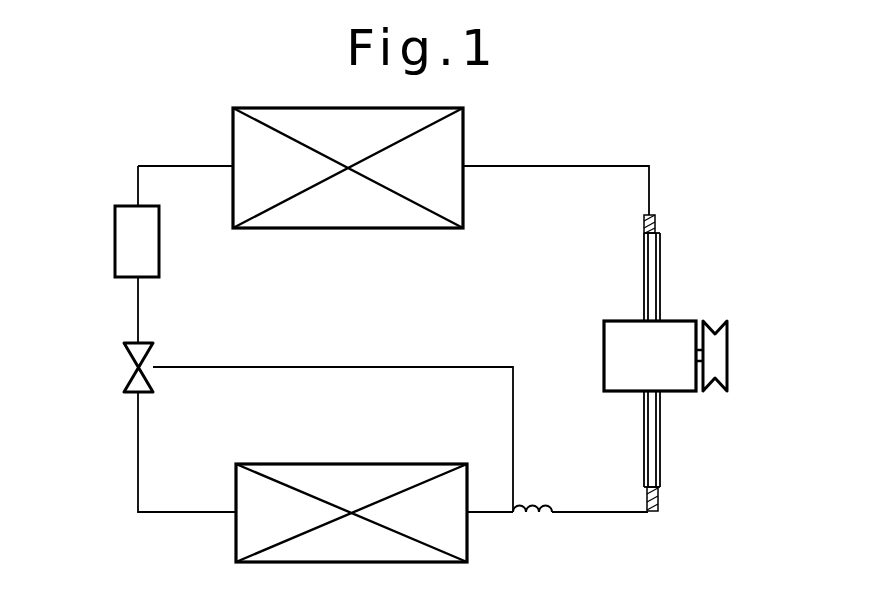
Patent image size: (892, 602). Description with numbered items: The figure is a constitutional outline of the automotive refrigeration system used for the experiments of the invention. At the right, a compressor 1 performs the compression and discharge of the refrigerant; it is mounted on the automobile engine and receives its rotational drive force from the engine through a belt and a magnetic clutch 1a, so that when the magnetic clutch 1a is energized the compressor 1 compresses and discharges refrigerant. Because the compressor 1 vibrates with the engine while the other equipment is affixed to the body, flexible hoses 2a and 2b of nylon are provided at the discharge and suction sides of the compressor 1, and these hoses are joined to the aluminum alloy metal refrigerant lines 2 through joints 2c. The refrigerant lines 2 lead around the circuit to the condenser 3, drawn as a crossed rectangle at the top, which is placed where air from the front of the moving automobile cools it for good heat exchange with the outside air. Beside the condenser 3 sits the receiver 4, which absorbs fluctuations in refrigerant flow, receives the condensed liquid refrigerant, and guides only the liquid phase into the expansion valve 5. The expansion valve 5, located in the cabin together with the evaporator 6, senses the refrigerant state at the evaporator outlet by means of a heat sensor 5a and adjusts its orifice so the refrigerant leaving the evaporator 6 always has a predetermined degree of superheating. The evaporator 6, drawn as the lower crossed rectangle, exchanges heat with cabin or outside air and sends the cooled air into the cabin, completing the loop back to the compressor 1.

The compressor 1 is at (675, 319).
The magnetic clutch 1a is at (727, 370).
The refrigerant lines 2 is at (649, 185).
The flexible hose 2a is at (652, 260).
The flexible hose 2b is at (660, 450).
The joints 2c is at (655, 222).
The condenser 3 is at (463, 133).
The receiver 4 is at (115, 228).
The expansion valve 5 is at (126, 358).
The heat sensor 5a is at (540, 498).
The evaporator 6 is at (236, 555).